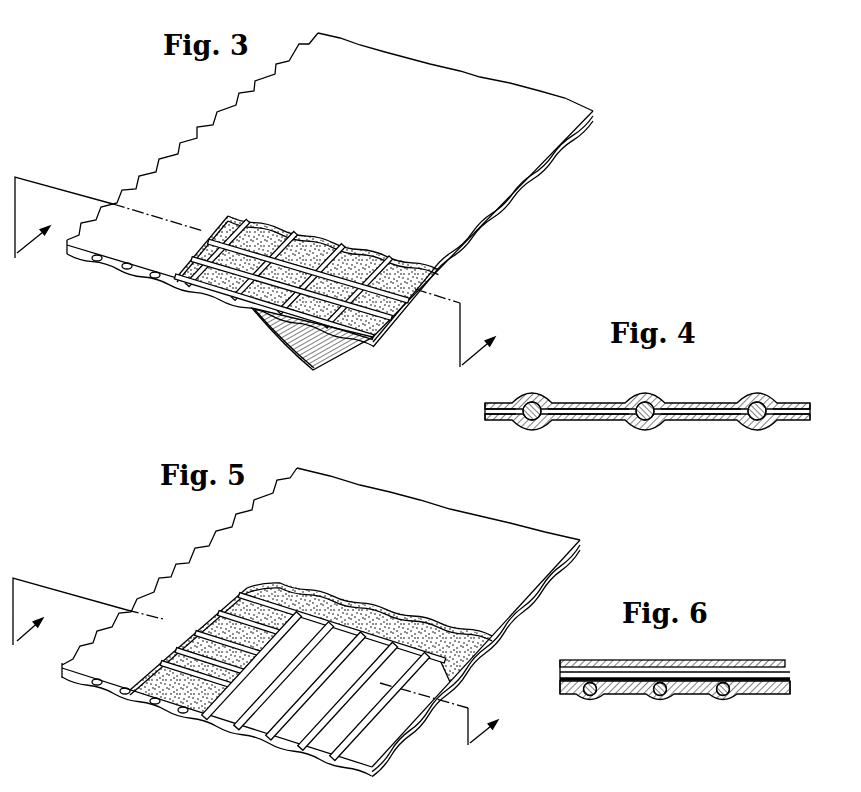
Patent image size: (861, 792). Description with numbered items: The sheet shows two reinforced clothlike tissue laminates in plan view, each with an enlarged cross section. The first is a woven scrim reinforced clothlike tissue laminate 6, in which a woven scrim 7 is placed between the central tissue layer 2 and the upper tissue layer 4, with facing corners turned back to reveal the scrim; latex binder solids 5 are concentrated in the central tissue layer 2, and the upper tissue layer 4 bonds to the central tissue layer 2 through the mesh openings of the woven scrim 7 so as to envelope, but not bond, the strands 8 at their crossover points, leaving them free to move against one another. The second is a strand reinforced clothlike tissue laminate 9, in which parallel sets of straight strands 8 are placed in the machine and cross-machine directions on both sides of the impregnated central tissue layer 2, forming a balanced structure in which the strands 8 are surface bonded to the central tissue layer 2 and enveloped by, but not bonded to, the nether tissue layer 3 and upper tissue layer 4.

In FIG. 3, the central tissue layer 2 is at (378, 339).
In FIG. 4, the central tissue layer 2 is at (485, 409).
In FIG. 5, the central tissue layer 2 is at (158, 690).
In FIG. 6, the central tissue layer 2 is at (560, 680).
In FIG. 3, the nether tissue layer 3 is at (331, 363).
In FIG. 4, the nether tissue layer 3 is at (588, 421).
In FIG. 5, the nether tissue layer 3 is at (383, 733).
In FIG. 6, the nether tissue layer 3 is at (757, 696).
In FIG. 3, the upper tissue layer 4 is at (175, 176).
In FIG. 4, the upper tissue layer 4 is at (685, 402).
In FIG. 5, the upper tissue layer 4 is at (237, 548).
In FIG. 6, the upper tissue layer 4 is at (750, 661).
In FIG. 3, the latex binder solids 5 is at (385, 310).
In FIG. 4, the latex binder solids 5 is at (700, 415).
In FIG. 5, the latex binder solids 5 is at (195, 700).
In FIG. 3, the woven scrim reinforced clothlike tissue laminate 6 is at (215, 137).
In FIG. 4, the woven scrim reinforced clothlike tissue laminate 6 is at (584, 390).
In FIG. 5, the woven scrim reinforced clothlike tissue laminate 6 is at (280, 661).
In FIG. 3, the woven scrim 7 is at (203, 275).
In FIG. 3, the strands 8 is at (258, 282).
In FIG. 4, the strands 8 is at (530, 396).
In FIG. 5, the strands 8 is at (300, 592).
In FIG. 6, the strands 8 is at (704, 676).
In FIG. 5, the strand reinforced clothlike tissue laminate 9 is at (188, 574).
In FIG. 6, the strand reinforced clothlike tissue laminate 9 is at (609, 653).